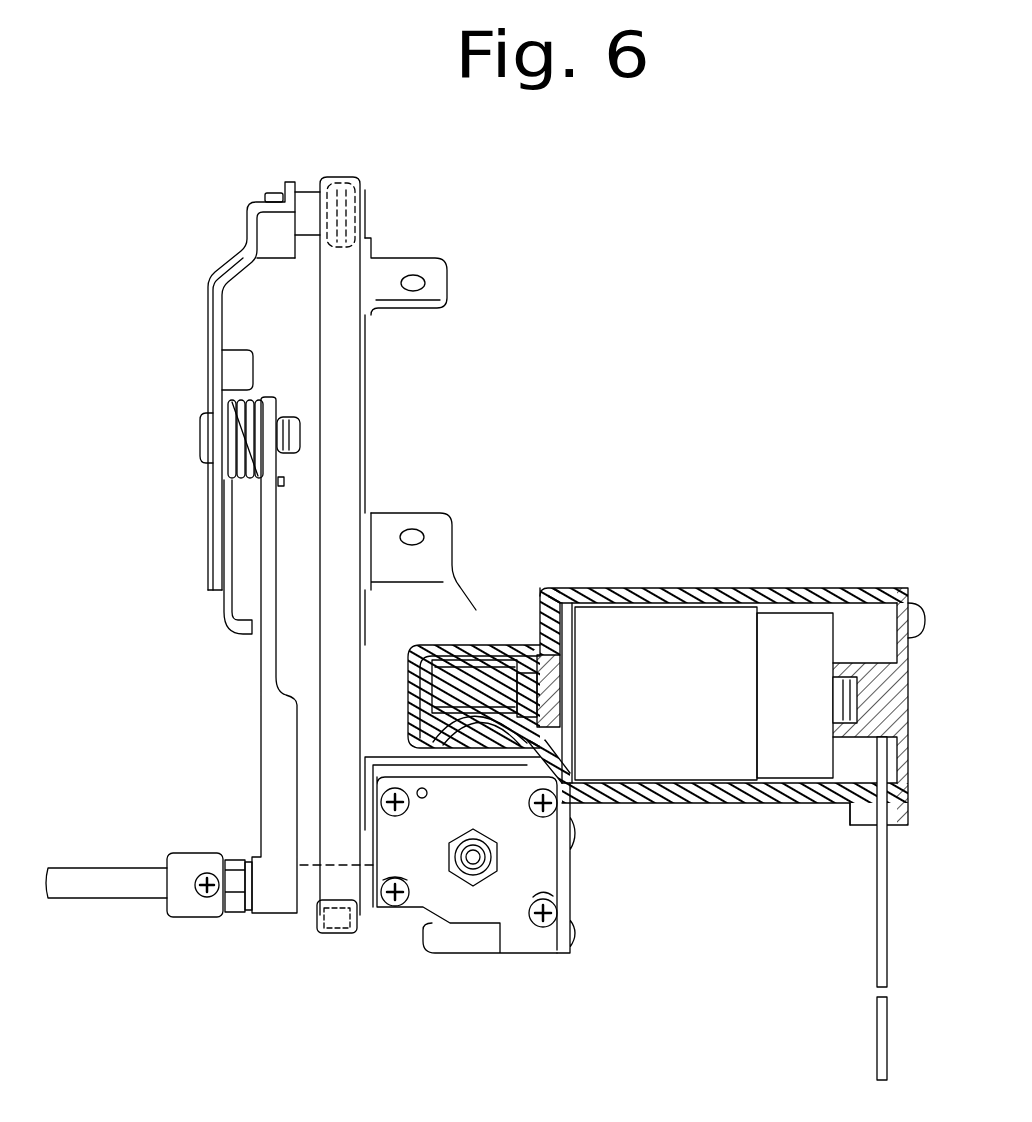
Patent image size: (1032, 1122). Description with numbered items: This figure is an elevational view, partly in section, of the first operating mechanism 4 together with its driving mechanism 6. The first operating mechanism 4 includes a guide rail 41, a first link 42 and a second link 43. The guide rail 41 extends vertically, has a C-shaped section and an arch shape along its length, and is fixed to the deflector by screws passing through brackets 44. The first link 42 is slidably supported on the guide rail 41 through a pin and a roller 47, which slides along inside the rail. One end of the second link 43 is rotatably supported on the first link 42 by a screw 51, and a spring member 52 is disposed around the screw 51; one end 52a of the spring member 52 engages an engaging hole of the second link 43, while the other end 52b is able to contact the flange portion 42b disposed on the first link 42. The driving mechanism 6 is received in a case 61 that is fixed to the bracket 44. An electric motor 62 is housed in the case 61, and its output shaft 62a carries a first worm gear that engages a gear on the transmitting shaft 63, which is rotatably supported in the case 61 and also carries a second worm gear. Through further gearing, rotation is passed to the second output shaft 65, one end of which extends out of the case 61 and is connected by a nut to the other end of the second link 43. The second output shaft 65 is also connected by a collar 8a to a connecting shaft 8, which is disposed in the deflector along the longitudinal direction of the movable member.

The first operating mechanism 4 is at (181, 438).
The driving mechanism 6 is at (592, 488).
The connecting shaft 8 is at (107, 890).
The collar 8a is at (197, 900).
The guide rail 41 is at (344, 422).
The first link 42 is at (233, 283).
The flange portion 42b is at (233, 368).
The second link 43 is at (268, 733).
The bracket 44 is at (442, 286).
The roller 47 is at (345, 218).
The screw 51 is at (200, 458).
The spring member 52 is at (247, 433).
The one end of the spring member 52a is at (284, 482).
The other end of the spring member 52b is at (230, 623).
The case 61 is at (788, 597).
The electric motor 62 is at (656, 630).
The output shaft 62a is at (470, 648).
The transmitting shaft 63 is at (479, 692).
The second output shaft 65 is at (306, 920).